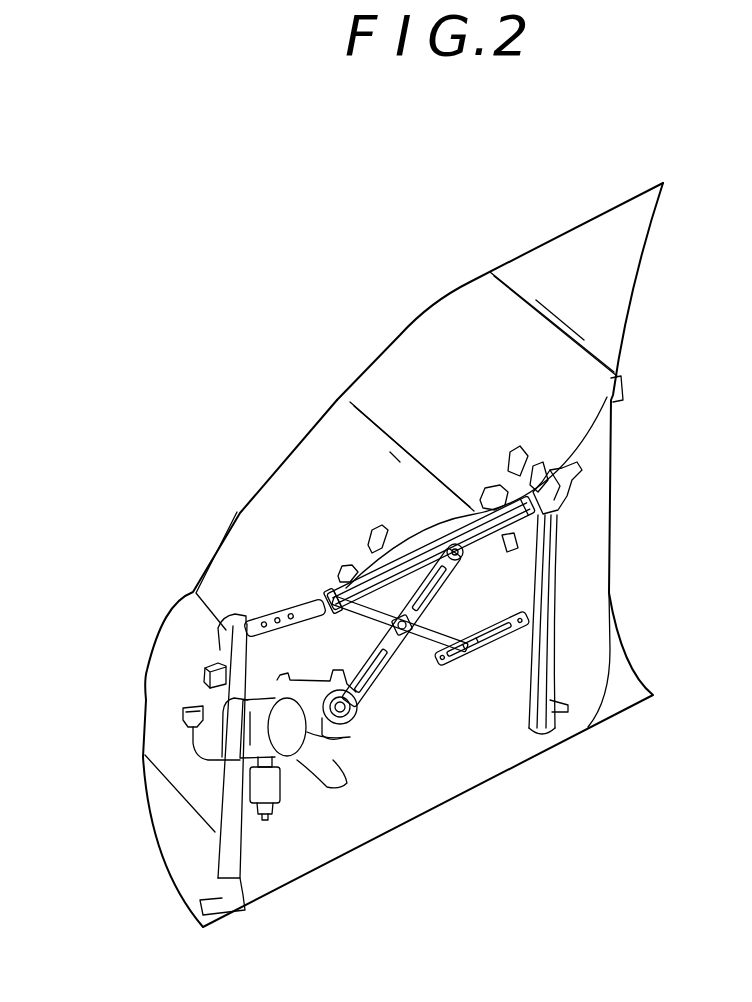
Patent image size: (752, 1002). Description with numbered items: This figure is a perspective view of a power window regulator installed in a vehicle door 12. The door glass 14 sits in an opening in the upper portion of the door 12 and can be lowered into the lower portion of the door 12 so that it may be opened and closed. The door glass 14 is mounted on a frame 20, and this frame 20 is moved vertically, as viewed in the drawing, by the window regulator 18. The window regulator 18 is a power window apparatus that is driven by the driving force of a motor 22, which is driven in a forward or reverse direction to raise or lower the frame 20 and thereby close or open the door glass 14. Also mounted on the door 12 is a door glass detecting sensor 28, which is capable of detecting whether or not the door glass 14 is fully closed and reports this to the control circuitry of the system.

The door 12 is at (143, 771).
The door glass 14 is at (422, 323).
The window regulator 18 is at (357, 736).
The frame 20 is at (417, 547).
The motor 22 is at (285, 790).
The door glass detecting sensor 28 is at (203, 672).